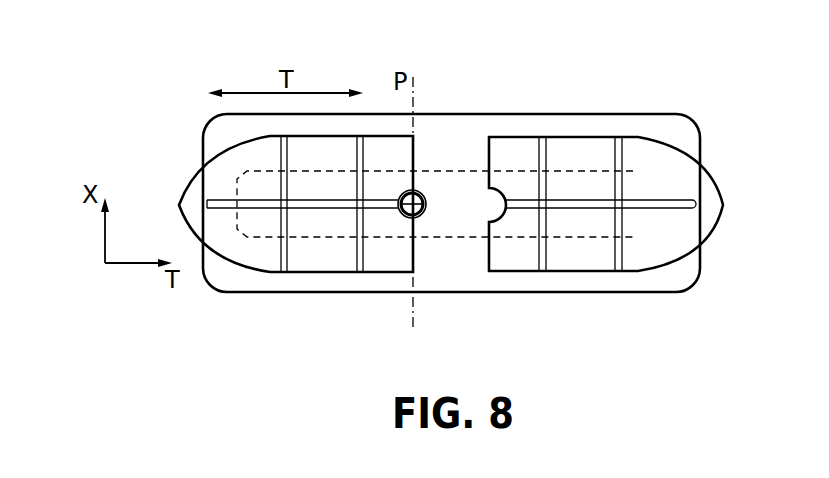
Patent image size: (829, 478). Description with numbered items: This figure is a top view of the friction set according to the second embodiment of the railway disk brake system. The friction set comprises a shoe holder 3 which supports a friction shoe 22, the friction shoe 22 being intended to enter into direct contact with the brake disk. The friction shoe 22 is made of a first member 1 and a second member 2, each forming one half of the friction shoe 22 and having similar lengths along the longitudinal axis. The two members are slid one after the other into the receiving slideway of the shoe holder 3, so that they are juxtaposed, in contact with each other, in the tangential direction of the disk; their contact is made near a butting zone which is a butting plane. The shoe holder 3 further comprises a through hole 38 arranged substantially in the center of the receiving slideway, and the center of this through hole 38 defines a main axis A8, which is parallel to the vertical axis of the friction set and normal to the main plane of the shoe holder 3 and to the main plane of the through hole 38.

The first member 1 is at (576, 282).
The second member 2 is at (328, 282).
The shoe holder 3 is at (204, 110).
The friction shoe 22 is at (584, 152).
The through hole 38 is at (418, 191).
The main axis A8 is at (417, 215).